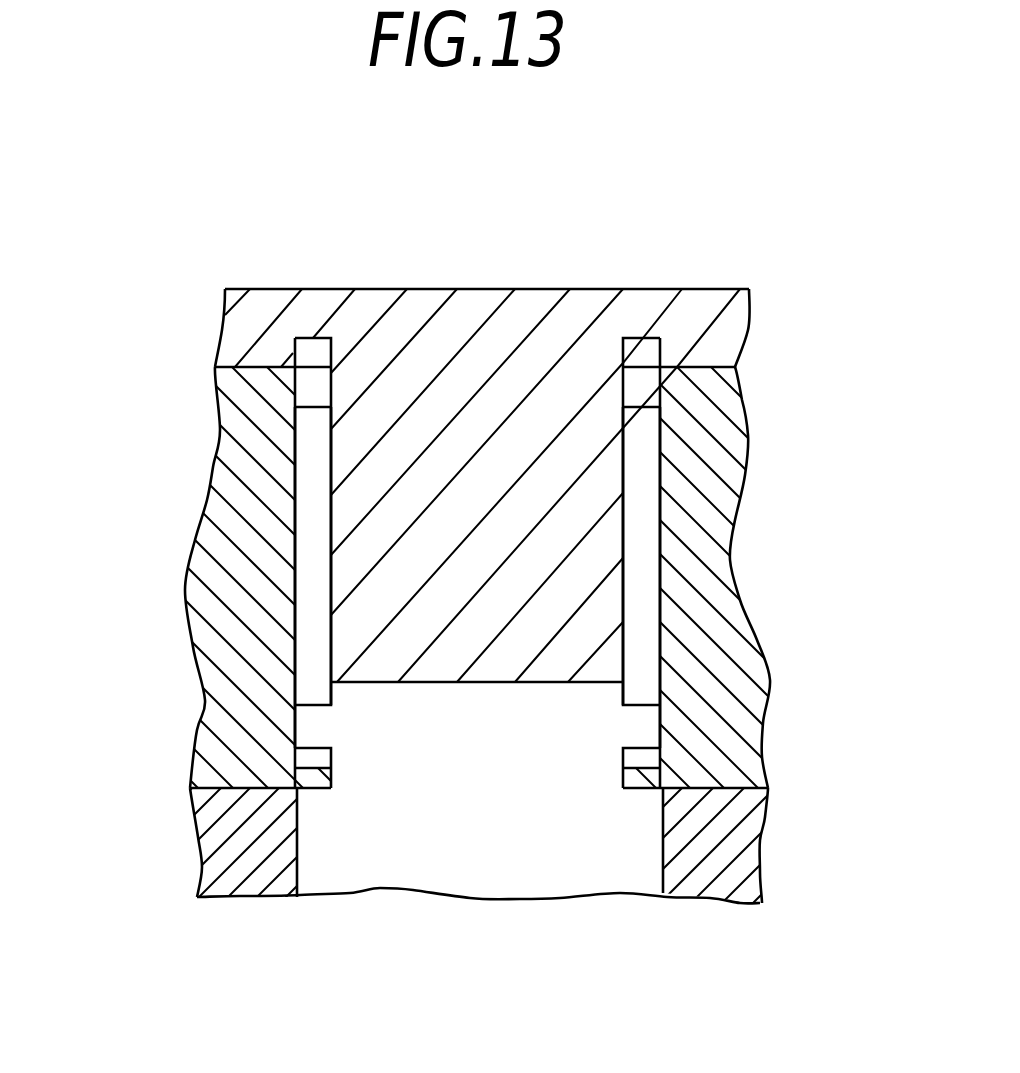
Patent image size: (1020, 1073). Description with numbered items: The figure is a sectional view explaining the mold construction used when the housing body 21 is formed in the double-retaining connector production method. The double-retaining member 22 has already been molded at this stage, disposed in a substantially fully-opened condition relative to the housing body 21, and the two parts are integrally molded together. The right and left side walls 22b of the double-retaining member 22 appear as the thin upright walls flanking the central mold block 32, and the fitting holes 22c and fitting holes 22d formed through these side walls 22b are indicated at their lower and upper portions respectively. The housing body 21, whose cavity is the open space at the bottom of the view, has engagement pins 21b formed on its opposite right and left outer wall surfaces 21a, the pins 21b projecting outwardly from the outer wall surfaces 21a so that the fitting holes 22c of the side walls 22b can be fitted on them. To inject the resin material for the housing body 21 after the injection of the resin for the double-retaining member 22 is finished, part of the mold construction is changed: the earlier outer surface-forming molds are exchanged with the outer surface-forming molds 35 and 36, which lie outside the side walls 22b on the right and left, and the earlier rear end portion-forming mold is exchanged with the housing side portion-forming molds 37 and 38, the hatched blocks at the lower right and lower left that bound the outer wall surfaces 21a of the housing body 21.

The housing body 21 is at (500, 848).
The outer wall surface 21a is at (298, 845).
The engagement pin 21b is at (308, 738).
The double-retaining member 22 is at (637, 520).
The side wall 22b is at (308, 477).
The fitting hole 22c is at (310, 710).
The fitting hole 22d is at (308, 388).
The core block 32 is at (542, 365).
The outer surface-forming mold 35 is at (727, 597).
The outer surface-forming mold 36 is at (215, 563).
The housing side portion-forming mold 37 is at (707, 870).
The housing side portion-forming mold 38 is at (243, 860).